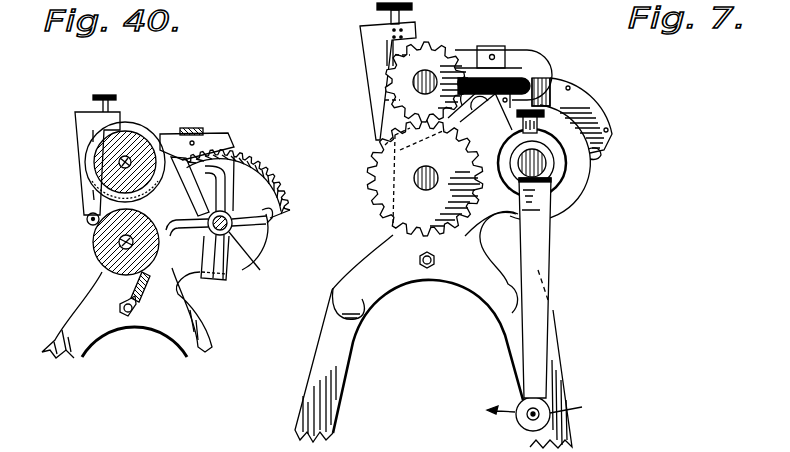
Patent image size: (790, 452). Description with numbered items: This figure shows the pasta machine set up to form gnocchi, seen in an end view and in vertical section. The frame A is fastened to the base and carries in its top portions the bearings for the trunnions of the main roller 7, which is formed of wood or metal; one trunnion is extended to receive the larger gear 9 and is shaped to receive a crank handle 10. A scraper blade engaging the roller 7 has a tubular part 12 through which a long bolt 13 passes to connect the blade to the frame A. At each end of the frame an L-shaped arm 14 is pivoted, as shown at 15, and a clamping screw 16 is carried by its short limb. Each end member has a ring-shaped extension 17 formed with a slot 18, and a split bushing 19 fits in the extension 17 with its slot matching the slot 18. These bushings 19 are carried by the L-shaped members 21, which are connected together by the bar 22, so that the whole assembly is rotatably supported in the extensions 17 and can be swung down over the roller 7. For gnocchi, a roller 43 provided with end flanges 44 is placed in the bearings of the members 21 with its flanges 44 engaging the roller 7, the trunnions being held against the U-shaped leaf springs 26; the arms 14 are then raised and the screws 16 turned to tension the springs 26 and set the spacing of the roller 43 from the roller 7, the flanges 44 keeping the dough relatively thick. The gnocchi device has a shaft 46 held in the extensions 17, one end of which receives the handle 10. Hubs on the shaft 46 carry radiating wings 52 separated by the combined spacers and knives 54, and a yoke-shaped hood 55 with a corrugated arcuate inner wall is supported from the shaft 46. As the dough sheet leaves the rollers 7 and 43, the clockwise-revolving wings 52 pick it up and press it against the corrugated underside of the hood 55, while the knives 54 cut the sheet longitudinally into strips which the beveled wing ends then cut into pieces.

In FIG. 40, the frame A is at (63, 327).
In FIG. 7, the frame A is at (302, 362).
In FIG. 40, the main roller 7 is at (107, 252).
In FIG. 7, the larger gear 9 is at (372, 182).
In FIG. 7, the crank handle 10 is at (537, 259).
In FIG. 40, the tubular part 12 is at (139, 322).
In FIG. 40, the long bolt 13 is at (124, 319).
In FIG. 7, the long bolt 13 is at (426, 270).
In FIG. 40, the L-shaped arm 14 is at (78, 119).
In FIG. 7, the L-shaped arm 14 is at (366, 72).
In FIG. 40, the pivot 15 is at (92, 226).
In FIG. 7, the pivot 15 is at (379, 141).
In FIG. 40, the clamping screw 16 is at (104, 95).
In FIG. 7, the clamping screw 16 is at (414, 7).
In FIG. 7, the ring-shaped extension 17 is at (572, 197).
In FIG. 7, the slot 18 is at (503, 113).
In FIG. 7, the split bushing 19 is at (560, 175).
In FIG. 40, the L-shaped member 21 is at (248, 138).
In FIG. 7, the L-shaped member 21 is at (540, 62).
In FIG. 40, the bar 22 is at (192, 128).
In FIG. 7, the bar 22 is at (498, 46).
In FIG. 40, the leaf spring 26 is at (176, 186).
In FIG. 7, the leaf spring 26 is at (553, 82).
In FIG. 40, the gnocchi roller 43 is at (102, 162).
In FIG. 40, the end flange 44 is at (92, 180).
In FIG. 40, the shaft 46 is at (242, 263).
In FIG. 40, the wing 52 is at (268, 226).
In FIG. 7, the wing 52 is at (604, 158).
In FIG. 40, the combined spacer and knife 54 is at (213, 283).
In FIG. 40, the hood 55 is at (274, 188).
In FIG. 7, the hood 55 is at (598, 114).